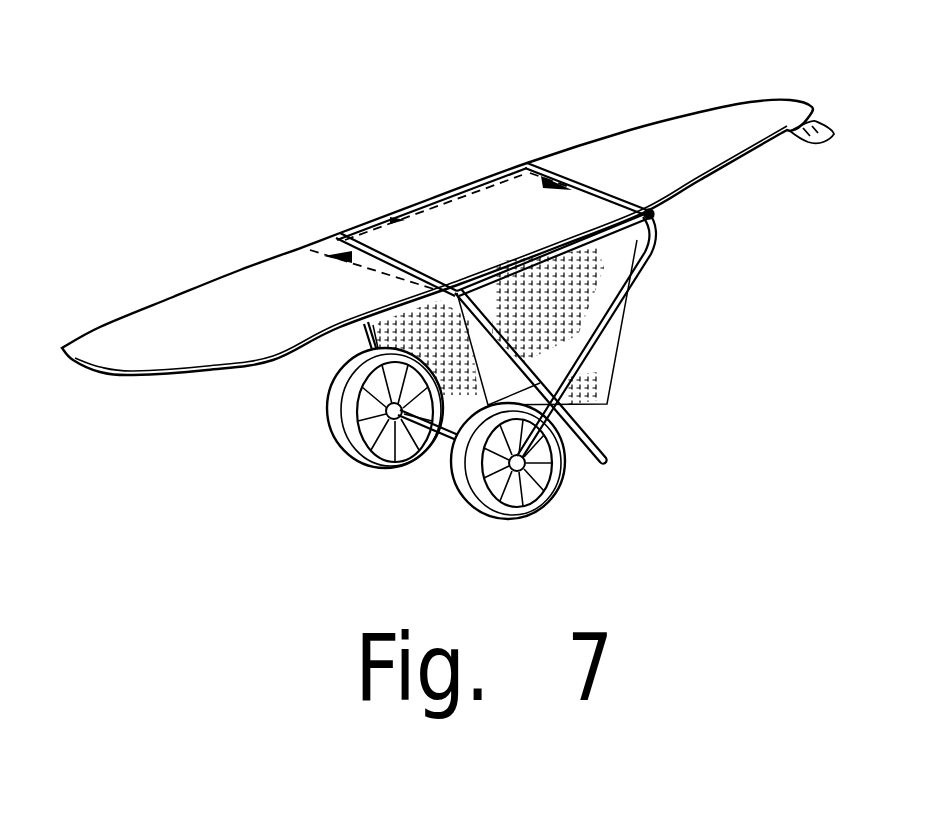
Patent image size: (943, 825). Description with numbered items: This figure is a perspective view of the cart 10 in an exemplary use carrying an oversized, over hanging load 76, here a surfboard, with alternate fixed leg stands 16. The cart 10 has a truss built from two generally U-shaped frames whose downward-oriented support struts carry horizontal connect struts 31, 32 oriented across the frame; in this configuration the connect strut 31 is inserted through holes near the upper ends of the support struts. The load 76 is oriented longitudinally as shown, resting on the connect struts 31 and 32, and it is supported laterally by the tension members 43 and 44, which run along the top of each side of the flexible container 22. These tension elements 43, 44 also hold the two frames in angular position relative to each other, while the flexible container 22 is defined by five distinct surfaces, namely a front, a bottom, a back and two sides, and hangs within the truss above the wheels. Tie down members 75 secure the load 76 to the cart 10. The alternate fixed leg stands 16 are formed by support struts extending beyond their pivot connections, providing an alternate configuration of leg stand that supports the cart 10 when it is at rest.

The cart 10 is at (447, 451).
The leg stand 16 is at (590, 430).
The flexible container 22 is at (603, 364).
The connect strut 31 is at (687, 212).
The connect strut 32 is at (300, 247).
The tension element 43 is at (608, 250).
The tension element 44 is at (383, 213).
The tie down member 75 is at (548, 186).
The over hanging load 76 is at (647, 143).